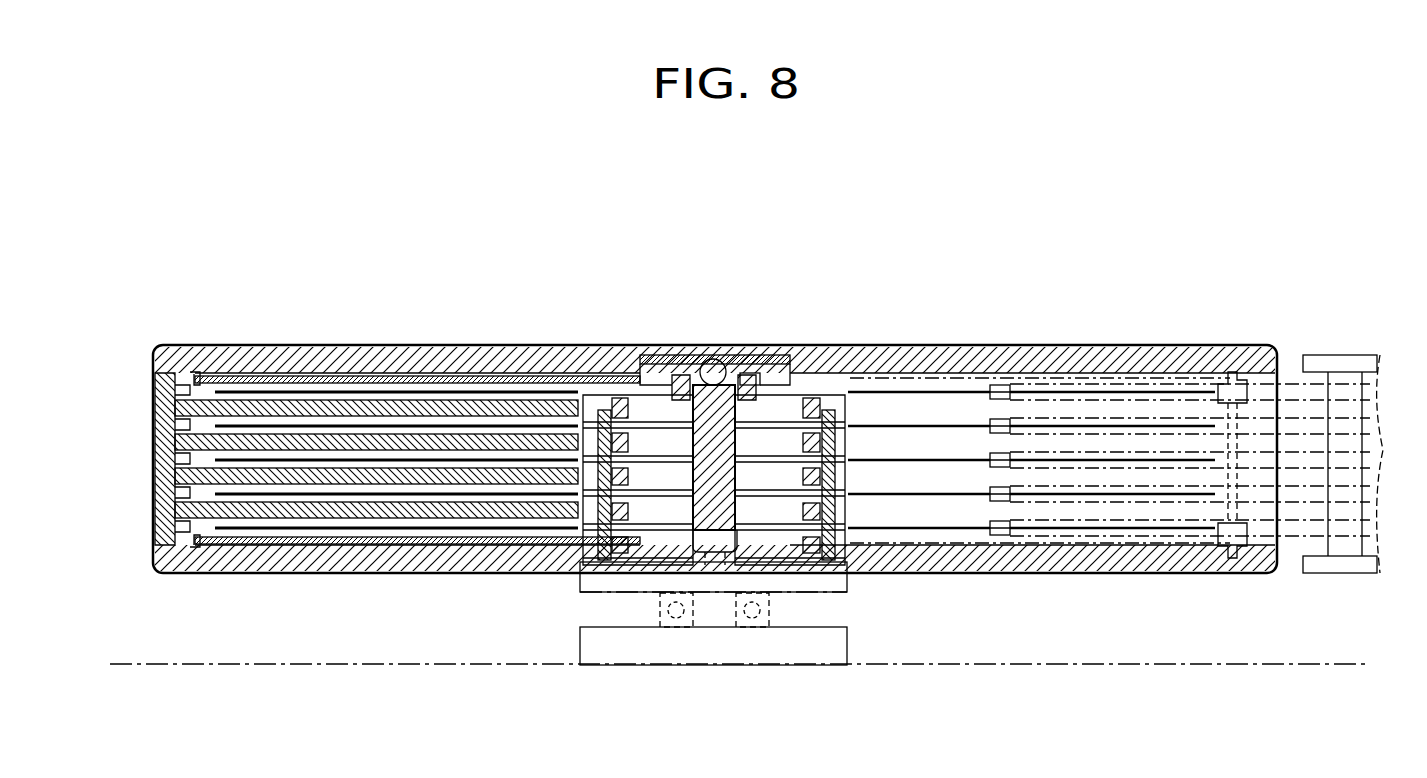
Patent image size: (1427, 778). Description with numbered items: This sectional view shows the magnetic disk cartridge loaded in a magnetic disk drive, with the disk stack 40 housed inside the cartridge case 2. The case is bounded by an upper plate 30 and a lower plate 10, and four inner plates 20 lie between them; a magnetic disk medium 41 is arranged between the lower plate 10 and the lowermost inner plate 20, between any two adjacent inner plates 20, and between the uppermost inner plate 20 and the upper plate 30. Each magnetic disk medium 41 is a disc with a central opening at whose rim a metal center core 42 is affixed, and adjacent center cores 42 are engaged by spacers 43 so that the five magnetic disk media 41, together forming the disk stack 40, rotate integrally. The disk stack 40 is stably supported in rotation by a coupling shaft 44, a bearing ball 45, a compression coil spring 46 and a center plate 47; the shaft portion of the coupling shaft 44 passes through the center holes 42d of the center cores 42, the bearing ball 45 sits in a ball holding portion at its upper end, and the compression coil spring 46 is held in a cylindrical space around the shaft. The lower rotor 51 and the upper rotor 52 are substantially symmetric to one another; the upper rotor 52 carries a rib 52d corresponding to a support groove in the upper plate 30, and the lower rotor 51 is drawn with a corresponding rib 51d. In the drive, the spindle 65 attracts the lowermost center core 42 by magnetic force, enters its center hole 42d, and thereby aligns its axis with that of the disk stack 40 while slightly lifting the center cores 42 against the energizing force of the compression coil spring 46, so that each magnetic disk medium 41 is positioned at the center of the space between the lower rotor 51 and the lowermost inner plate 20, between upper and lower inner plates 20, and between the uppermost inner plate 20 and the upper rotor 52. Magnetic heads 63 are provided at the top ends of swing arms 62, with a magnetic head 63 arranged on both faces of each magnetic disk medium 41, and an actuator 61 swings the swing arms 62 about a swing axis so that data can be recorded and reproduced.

The cartridge case 2 is at (674, 400).
The lower plate 10 is at (328, 575).
The inner plate 20 is at (150, 408).
The upper plate 30 is at (332, 345).
The disk stack 40 is at (950, 528).
The magnetic disk medium 41 is at (715, 376).
The center core 42 is at (618, 680).
The center hole 42d is at (715, 560).
The spacer 43 is at (795, 500).
The coupling shaft 44 is at (742, 388).
The bearing ball 45 is at (712, 370).
The compression coil spring 46 is at (788, 380).
The center plate 47 is at (660, 375).
The lower rotor 51 is at (246, 543).
The lower liner plate tab 51d is at (194, 548).
The upper rotor 52 is at (246, 378).
The rib 52d is at (194, 373).
The actuator 61 is at (1318, 352).
The swing arm 62 is at (1298, 572).
The magnetic head 63 is at (1012, 385).
The spindle 65 is at (862, 610).